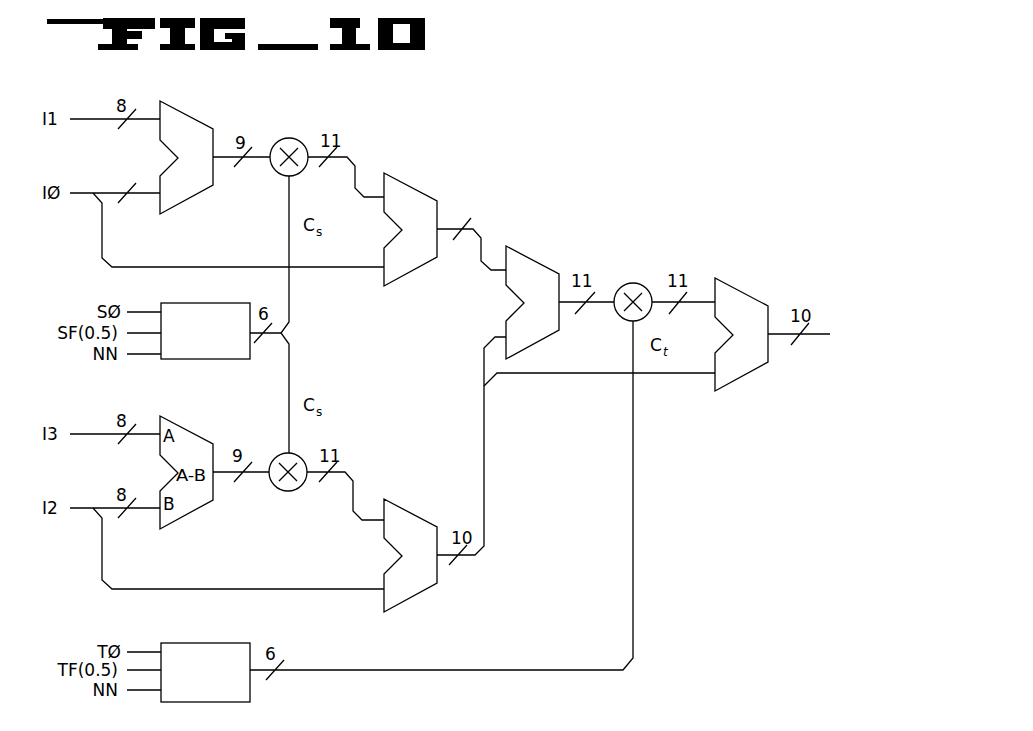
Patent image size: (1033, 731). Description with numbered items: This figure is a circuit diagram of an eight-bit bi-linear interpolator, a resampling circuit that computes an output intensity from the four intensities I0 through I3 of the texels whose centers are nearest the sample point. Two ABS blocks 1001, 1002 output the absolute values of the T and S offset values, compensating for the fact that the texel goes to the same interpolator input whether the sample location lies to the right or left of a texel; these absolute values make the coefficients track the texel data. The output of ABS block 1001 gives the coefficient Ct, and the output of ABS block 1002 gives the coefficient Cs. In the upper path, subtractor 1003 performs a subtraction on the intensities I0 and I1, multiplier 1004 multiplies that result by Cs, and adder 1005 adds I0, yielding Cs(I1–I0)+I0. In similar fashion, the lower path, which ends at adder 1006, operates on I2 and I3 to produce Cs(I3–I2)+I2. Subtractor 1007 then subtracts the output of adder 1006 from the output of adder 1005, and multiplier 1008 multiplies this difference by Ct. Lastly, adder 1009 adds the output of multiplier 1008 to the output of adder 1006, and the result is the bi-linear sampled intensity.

The ABS block 1001 is at (206, 640).
The ABS block 1002 is at (208, 362).
The subtractor 1003 is at (174, 107).
The multiplier 1004 is at (296, 139).
The adder 1005 is at (401, 183).
The adder 1006 is at (398, 503).
The subtractor 1007 is at (530, 255).
The multiplier 1008 is at (630, 281).
The adder 1009 is at (736, 286).